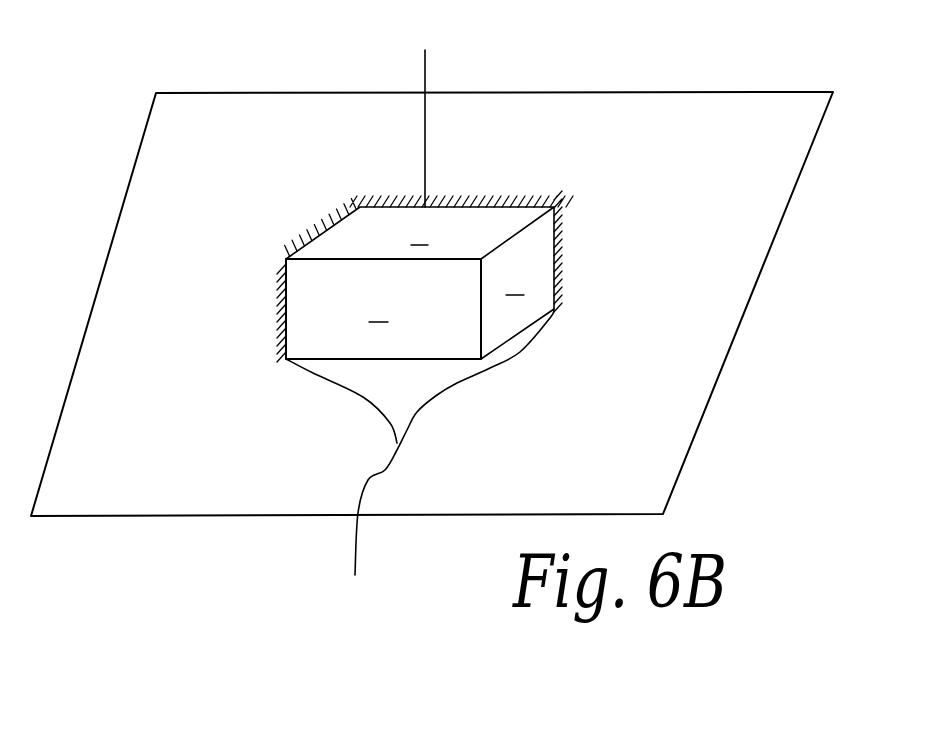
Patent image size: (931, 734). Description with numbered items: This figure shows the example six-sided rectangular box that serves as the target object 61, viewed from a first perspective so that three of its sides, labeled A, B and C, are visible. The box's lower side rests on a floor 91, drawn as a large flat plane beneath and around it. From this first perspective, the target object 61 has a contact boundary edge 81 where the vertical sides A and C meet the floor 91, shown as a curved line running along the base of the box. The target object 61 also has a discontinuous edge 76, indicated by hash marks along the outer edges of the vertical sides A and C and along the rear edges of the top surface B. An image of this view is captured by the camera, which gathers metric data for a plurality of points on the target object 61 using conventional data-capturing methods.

The target object 61 is at (481, 287).
The discontinuous edge 76 is at (427, 107).
The contact boundary edge 81 is at (420, 465).
The floor 91 is at (697, 196).